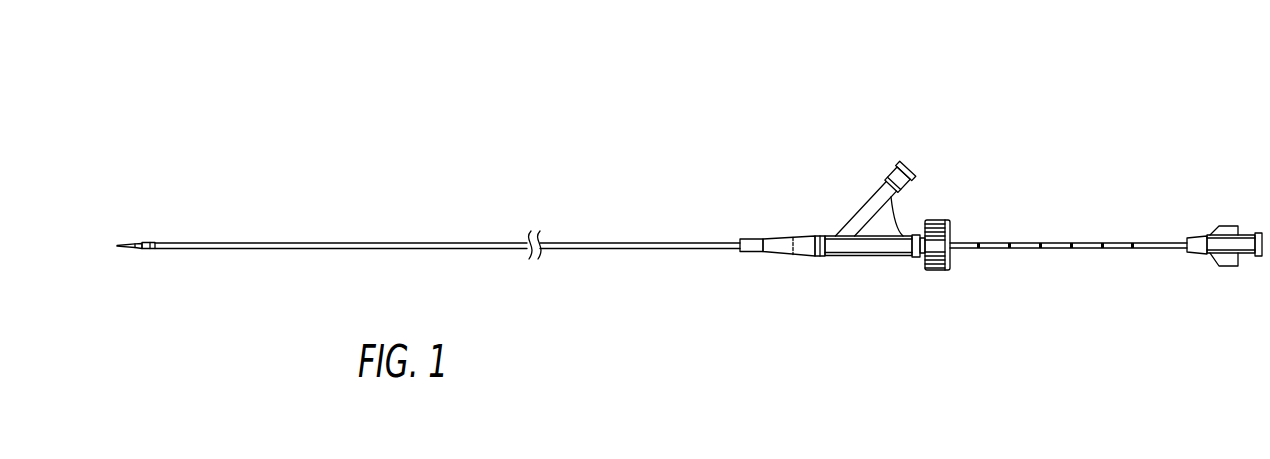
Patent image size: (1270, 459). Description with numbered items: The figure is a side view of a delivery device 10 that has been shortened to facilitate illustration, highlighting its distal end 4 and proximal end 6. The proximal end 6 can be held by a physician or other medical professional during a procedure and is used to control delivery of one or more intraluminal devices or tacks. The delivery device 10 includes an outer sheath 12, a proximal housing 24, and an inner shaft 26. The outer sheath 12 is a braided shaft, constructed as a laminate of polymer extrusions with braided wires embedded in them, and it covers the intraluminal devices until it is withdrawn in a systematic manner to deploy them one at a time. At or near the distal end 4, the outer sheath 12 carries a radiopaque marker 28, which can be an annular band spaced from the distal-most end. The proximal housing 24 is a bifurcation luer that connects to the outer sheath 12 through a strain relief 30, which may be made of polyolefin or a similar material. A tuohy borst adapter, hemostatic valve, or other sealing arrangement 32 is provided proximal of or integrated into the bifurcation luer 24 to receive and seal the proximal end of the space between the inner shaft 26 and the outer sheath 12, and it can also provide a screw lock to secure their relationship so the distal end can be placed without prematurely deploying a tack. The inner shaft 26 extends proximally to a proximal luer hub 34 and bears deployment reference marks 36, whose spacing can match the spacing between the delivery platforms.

The distal end 4 is at (250, 180).
The proximal end 6 is at (1000, 156).
The delivery device 10 is at (720, 92).
The outer sheath 12 is at (360, 242).
The proximal housing 24 is at (868, 256).
The inner shaft 26 is at (970, 250).
The radiopaque marker 28 is at (158, 250).
The strain relief 30 is at (777, 240).
The sealing arrangement 32 is at (940, 219).
The proximal luer hub 34 is at (1244, 238).
The deployment reference marks 36 is at (1071, 243).